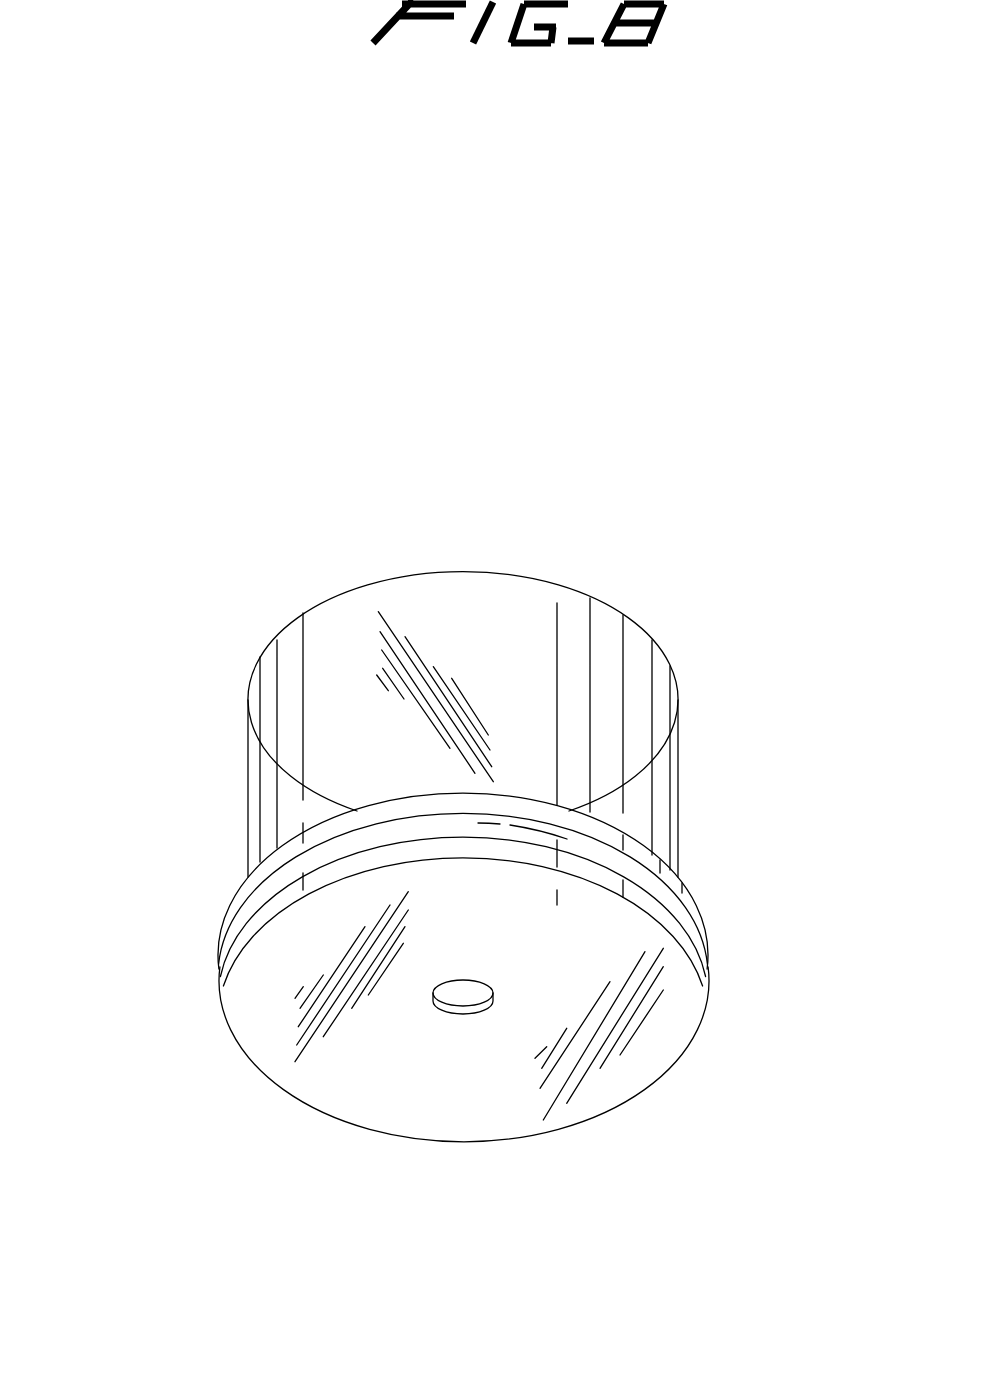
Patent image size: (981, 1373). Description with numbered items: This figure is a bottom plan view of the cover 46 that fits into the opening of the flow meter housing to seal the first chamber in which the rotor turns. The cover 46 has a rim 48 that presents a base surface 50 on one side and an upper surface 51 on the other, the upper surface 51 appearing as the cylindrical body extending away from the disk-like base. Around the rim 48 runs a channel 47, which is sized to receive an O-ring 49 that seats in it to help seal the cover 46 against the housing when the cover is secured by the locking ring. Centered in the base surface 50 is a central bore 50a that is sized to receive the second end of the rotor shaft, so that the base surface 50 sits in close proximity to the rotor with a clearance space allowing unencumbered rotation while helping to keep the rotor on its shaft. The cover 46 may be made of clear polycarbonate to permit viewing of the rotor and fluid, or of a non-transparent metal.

The cover 46 is at (650, 537).
The channel 47 is at (632, 843).
The rim 48 is at (277, 852).
The O-ring 49 is at (705, 952).
The base surface 50 is at (638, 1048).
The central bore 50a is at (465, 1006).
The upper surface 51 is at (367, 585).